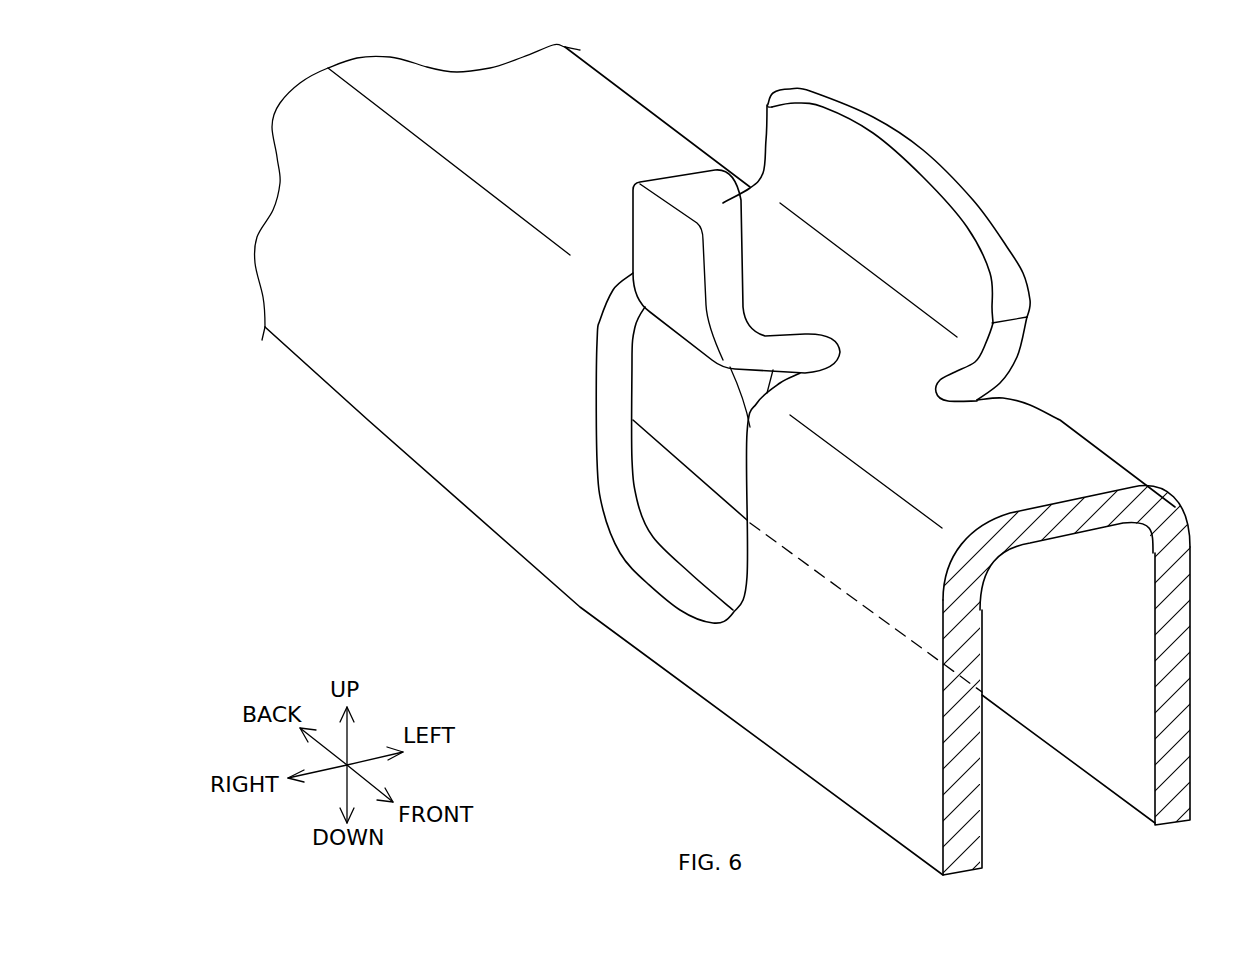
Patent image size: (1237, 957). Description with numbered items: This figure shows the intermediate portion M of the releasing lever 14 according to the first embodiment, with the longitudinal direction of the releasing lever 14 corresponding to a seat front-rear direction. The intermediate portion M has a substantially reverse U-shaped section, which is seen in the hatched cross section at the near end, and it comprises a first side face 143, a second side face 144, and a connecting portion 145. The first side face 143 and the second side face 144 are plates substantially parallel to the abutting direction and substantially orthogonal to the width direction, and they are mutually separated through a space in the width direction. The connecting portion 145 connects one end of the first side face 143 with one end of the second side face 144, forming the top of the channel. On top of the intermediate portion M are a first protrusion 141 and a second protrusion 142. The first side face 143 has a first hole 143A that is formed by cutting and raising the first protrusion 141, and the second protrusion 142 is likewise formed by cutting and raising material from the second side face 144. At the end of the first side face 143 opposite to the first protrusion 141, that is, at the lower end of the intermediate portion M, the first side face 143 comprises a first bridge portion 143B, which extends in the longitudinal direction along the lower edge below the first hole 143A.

The intermediate portion M is at (1025, 165).
The releasing lever 14 is at (403, 380).
The first protrusion 141 is at (673, 187).
The second protrusion 142 is at (915, 160).
The first side face 143 is at (982, 793).
The first hole 143A is at (692, 527).
The first bridge portion 143B is at (662, 618).
The second side face 144 is at (1100, 743).
The connecting portion 145 is at (1033, 460).